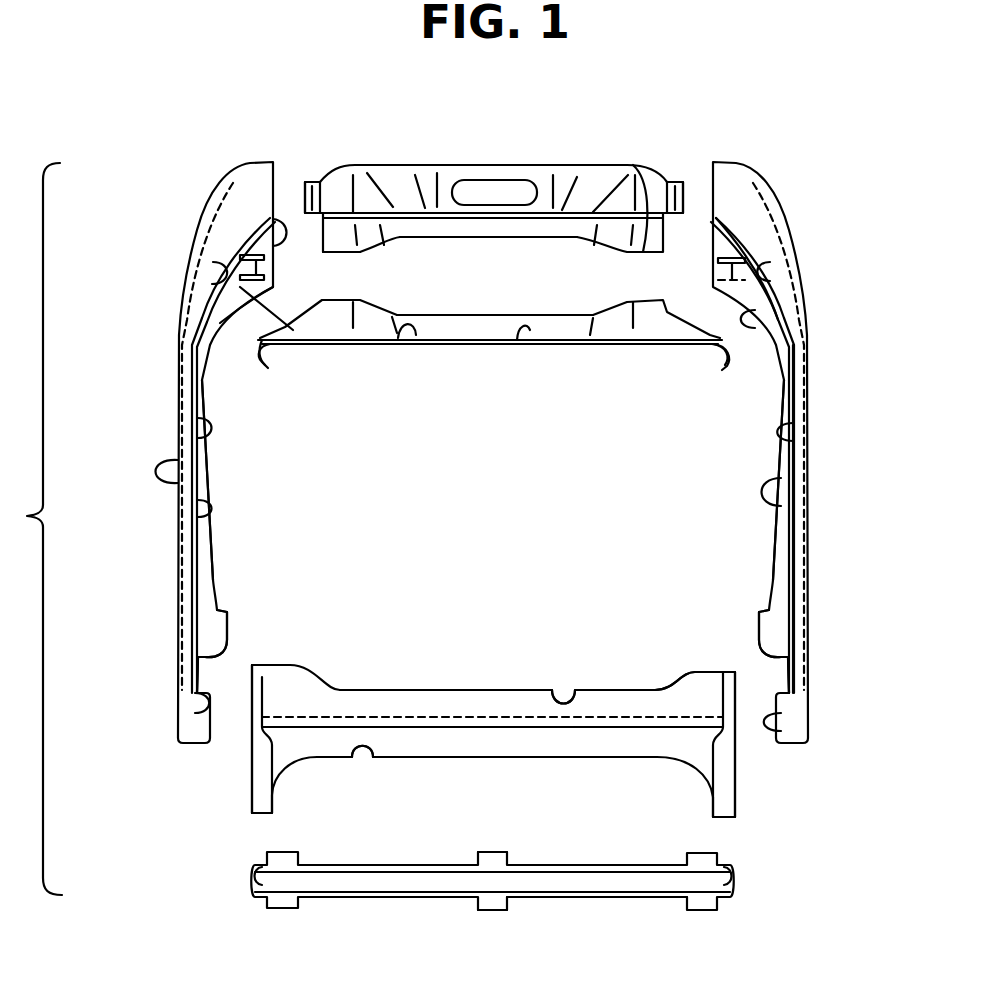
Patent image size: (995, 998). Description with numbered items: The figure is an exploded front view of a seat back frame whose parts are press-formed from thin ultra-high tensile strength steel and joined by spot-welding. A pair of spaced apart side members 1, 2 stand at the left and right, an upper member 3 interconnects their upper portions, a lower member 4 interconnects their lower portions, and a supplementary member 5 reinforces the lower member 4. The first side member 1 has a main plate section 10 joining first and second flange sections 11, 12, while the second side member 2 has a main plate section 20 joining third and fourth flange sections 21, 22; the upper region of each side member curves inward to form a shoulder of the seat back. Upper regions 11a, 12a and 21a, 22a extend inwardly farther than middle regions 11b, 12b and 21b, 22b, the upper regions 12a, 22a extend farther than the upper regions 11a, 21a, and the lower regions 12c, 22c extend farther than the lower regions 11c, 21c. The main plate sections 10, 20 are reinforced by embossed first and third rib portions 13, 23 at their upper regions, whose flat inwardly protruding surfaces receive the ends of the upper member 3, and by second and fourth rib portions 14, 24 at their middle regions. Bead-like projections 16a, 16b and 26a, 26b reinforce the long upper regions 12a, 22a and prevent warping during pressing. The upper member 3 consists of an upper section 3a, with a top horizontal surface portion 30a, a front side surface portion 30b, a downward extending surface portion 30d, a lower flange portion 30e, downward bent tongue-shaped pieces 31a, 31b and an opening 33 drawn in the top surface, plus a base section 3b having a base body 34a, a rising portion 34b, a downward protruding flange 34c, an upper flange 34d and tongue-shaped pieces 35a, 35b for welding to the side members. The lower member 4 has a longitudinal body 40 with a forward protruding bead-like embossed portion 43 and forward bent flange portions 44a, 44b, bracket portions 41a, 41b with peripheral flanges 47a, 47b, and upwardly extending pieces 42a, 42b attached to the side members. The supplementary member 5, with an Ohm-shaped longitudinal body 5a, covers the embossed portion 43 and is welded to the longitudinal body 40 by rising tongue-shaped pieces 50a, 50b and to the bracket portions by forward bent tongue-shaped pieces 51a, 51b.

The first side member 1 is at (753, 156).
The second side member 2 is at (237, 162).
The upper member 3 is at (519, 243).
The upper section 3a is at (507, 159).
The base section 3b is at (487, 344).
The lower member 4 is at (514, 689).
The supplementary member 5 is at (436, 861).
The longitudinal body 5a is at (577, 880).
The main plate section 10 is at (812, 406).
The first flange section 11 is at (787, 572).
The upper region 11a is at (770, 276).
The middle region 11b is at (780, 438).
The lower region 11c is at (785, 722).
The second flange section 12 is at (772, 523).
The upper region 12a is at (747, 327).
The middle region 12b is at (772, 483).
The lower region 12c is at (770, 625).
The first vertically extending rib portion 13 is at (768, 223).
The second vertically extending rib portion 14 is at (810, 363).
The bead-like projection 16a is at (708, 277).
The bead-like projection 16b is at (707, 340).
The main plate section 20 is at (198, 462).
The third flange section 21 is at (201, 573).
The upper region 21a is at (213, 268).
The middle region 21b is at (200, 422).
The lower region 21c is at (196, 698).
The fourth flange section 22 is at (212, 538).
The upper region 22a is at (277, 217).
The middle region 22b is at (200, 514).
The lower region 22c is at (205, 613).
The third vertically extending rib portion 23 is at (210, 231).
The fourth vertically extending rib portion 24 is at (183, 355).
The bead-like projection 26a is at (280, 290).
The bead-like projection 26b is at (283, 327).
The top horizontal surface portion 30a is at (412, 178).
The front side surface portion 30b is at (398, 200).
The downward extending surface portion 30d is at (558, 228).
The lower flange portion 30e is at (633, 168).
The tongue-shaped piece 31a is at (678, 200).
The tongue-shaped piece 31b is at (305, 195).
The slot 33 is at (490, 193).
The base body 34a is at (413, 327).
The rising portion 34b is at (535, 326).
The downward protruding flange 34c is at (447, 342).
The upper flange 34d is at (567, 318).
The tongue-shaped piece 35a is at (730, 365).
The tongue-shaped piece 35b is at (273, 378).
The longitudinal body 40 is at (415, 703).
The bracket portion 41a is at (737, 780).
The bracket portion 41b is at (250, 767).
The upwardly extending piece 42a is at (712, 682).
The upwardly extending piece 42b is at (278, 677).
The bead-like embossed portion 43 is at (573, 722).
The forward bent flange portion 44a is at (575, 705).
The forward bent flange portion 44b is at (358, 748).
The flange 47a is at (723, 786).
The flange 47b is at (260, 787).
The rising tongue-shaped pieces 50a is at (493, 860).
The rising tongue-shaped pieces 50b is at (493, 912).
The forward bent tongue-shaped piece 51a is at (735, 870).
The forward bent tongue-shaped piece 51b is at (250, 870).